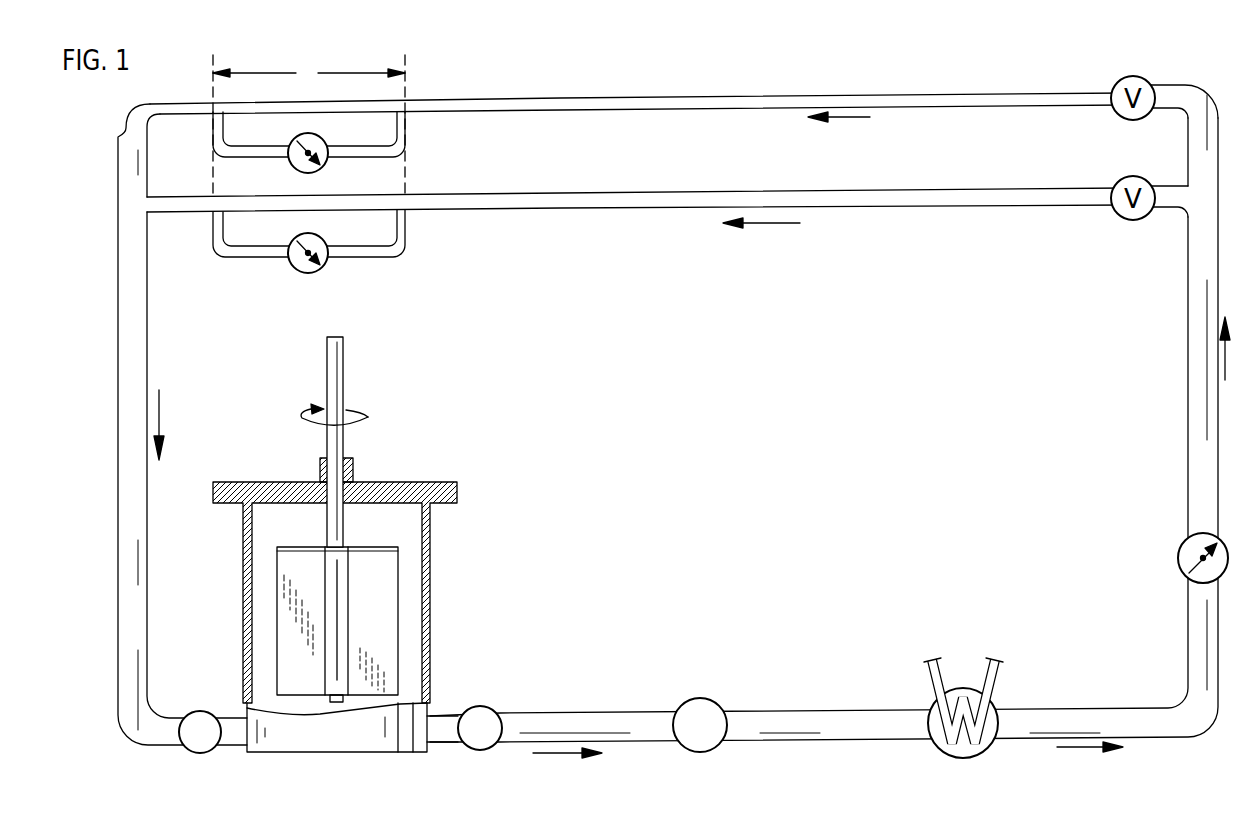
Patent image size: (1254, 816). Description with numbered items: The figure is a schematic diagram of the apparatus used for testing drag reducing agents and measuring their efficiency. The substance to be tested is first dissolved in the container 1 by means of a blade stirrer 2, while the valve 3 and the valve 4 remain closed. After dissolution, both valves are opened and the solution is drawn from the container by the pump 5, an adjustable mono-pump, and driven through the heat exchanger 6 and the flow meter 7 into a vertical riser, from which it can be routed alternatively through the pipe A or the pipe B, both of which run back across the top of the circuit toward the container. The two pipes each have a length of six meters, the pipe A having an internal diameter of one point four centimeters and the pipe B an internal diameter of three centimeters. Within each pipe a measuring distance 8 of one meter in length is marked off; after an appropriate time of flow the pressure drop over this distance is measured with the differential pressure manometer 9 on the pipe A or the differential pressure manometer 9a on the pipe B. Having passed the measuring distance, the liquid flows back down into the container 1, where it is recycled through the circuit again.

The container 1 is at (430, 578).
The blade stirrer 2 is at (343, 368).
The valve 3 is at (198, 711).
The valve 4 is at (489, 708).
The pump 5 is at (704, 701).
The heat exchanger 6 is at (963, 690).
The flow meter 7 is at (1178, 556).
The measuring distance 8 is at (309, 180).
The differential pressure manometer 9 is at (329, 159).
The differential pressure manometer 9a is at (329, 259).
The pipe A is at (597, 108).
The pipe B is at (615, 208).